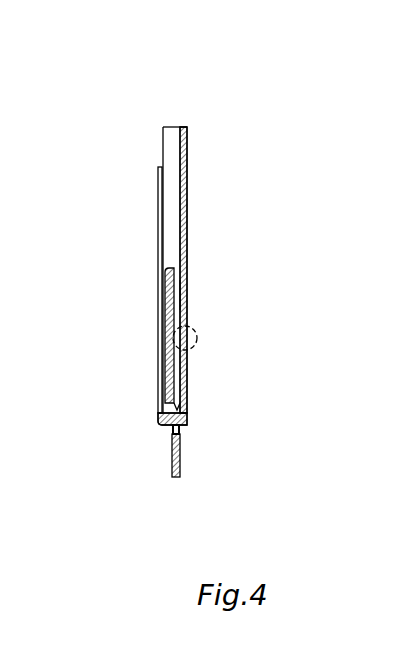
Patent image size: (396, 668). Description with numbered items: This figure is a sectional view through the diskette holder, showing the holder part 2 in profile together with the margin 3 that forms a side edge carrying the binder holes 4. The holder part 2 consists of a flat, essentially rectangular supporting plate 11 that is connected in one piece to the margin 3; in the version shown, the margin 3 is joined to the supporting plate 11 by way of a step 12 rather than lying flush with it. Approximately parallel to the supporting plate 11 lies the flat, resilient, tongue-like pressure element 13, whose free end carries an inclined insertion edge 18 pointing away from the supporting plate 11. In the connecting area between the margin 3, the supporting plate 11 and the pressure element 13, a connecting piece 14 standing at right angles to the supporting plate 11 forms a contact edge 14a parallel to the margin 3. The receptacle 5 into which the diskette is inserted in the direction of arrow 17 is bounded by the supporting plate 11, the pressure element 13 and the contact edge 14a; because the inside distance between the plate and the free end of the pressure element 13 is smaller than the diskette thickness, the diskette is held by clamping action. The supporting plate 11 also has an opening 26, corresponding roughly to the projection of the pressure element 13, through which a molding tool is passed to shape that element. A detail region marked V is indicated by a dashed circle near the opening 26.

The holder part 2 is at (202, 231).
The margin 3 is at (160, 488).
The holes 4 is at (183, 450).
The receptacle 5 is at (172, 168).
The supporting plate 11 is at (187, 158).
The step 12 is at (188, 432).
The pressure element 13 is at (160, 318).
The connecting piece 14 is at (168, 427).
The contact edge 14a is at (186, 402).
The arrow 17 is at (172, 108).
The inclined insertion edge 18 is at (165, 272).
The opening 26 is at (182, 292).
The detail V is at (197, 338).